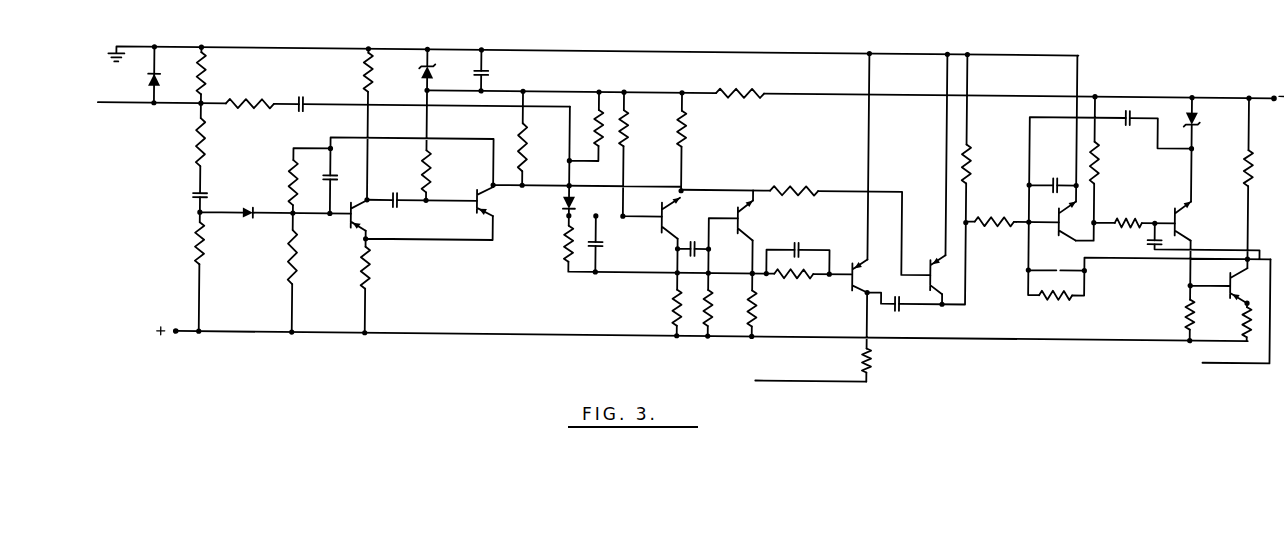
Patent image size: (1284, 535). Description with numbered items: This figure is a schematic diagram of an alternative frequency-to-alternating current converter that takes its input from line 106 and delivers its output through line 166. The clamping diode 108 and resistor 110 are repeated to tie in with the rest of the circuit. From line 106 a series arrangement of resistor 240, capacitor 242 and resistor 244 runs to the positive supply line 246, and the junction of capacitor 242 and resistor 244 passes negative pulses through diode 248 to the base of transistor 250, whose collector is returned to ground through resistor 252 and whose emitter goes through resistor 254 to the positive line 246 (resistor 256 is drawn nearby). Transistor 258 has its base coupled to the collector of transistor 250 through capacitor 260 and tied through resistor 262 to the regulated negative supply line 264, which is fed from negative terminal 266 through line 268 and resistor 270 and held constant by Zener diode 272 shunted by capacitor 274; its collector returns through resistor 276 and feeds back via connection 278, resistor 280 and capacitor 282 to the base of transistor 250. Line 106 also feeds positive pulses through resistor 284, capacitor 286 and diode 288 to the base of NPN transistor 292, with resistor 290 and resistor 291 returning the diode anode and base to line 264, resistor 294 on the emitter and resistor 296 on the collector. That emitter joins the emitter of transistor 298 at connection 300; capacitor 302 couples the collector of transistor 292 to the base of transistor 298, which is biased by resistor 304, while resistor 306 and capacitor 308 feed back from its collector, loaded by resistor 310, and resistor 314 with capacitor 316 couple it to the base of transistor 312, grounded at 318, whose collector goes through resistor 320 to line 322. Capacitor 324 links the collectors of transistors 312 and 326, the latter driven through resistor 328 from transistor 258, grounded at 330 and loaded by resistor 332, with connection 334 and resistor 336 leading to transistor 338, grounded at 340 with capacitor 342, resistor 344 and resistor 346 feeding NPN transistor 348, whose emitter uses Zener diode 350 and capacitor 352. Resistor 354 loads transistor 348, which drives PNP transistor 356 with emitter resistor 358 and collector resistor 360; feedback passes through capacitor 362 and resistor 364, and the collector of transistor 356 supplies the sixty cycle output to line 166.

The line 106 is at (104, 108).
The clamping diode 108 is at (147, 87).
The resistor 110 is at (196, 72).
The line 166 is at (1226, 359).
The resistor 240 is at (196, 143).
The capacitor 242 is at (194, 203).
The resistor 244 is at (194, 243).
The positive supply line 246 is at (182, 337).
The diode 248 is at (248, 223).
The transistor 250 is at (351, 226).
The resistor 252 is at (363, 80).
The resistor 254 is at (371, 288).
The resistor 256 is at (289, 254).
The transistor 258 is at (465, 206).
The capacitor 260 is at (394, 196).
The resistor 262 is at (431, 173).
The regulated negative supply line 264 is at (509, 90).
The negative terminal 266 is at (1272, 86).
The line 268 is at (1178, 90).
The resistor 270 is at (742, 90).
The Zener diode 272 is at (420, 72).
The capacitor 274 is at (488, 62).
The resistor 276 is at (527, 152).
The connection 278 is at (389, 140).
The resistor 280 is at (290, 183).
The capacitor 282 is at (346, 178).
The resistor 284 is at (250, 101).
The capacitor 286 is at (304, 109).
The diode 288 is at (563, 206).
The resistor 290 is at (596, 106).
The resistor 291 is at (627, 128).
The NPN transistor 292 is at (653, 228).
The resistor 294 is at (686, 134).
The resistor 296 is at (675, 308).
The transistor 298 is at (737, 213).
The connection 300 is at (689, 190).
The capacitor 302 is at (703, 234).
The resistor 304 is at (732, 298).
The resistor 306 is at (565, 241).
The capacitor 308 is at (597, 262).
The resistor 310 is at (758, 306).
The transistor 312 is at (850, 261).
The resistor 314 is at (798, 277).
The capacitor 316 is at (796, 246).
The ground connection 318 is at (872, 150).
The resistor 320 is at (865, 367).
The line 322 is at (763, 379).
The capacitor 324 is at (902, 307).
The transistor 326 is at (927, 259).
The resistor 328 is at (800, 186).
The ground connection 330 is at (944, 173).
The resistor 332 is at (972, 168).
The connection 334 is at (968, 216).
The resistor 336 is at (994, 235).
The transistor 338 is at (1063, 231).
The ground connection 340 is at (1079, 78).
The capacitor 342 is at (1057, 175).
The resistor 344 is at (1100, 157).
The resistor 346 is at (1128, 214).
The NPN transistor 348 is at (1173, 206).
The Zener diode 350 is at (1196, 118).
The capacitor 352 is at (1130, 106).
The resistor 354 is at (1186, 305).
The PNP transistor 356 is at (1242, 296).
The resistor 358 is at (1243, 322).
The resistor 360 is at (1246, 156).
The capacitor 362 is at (1150, 246).
The resistor 364 is at (1054, 294).